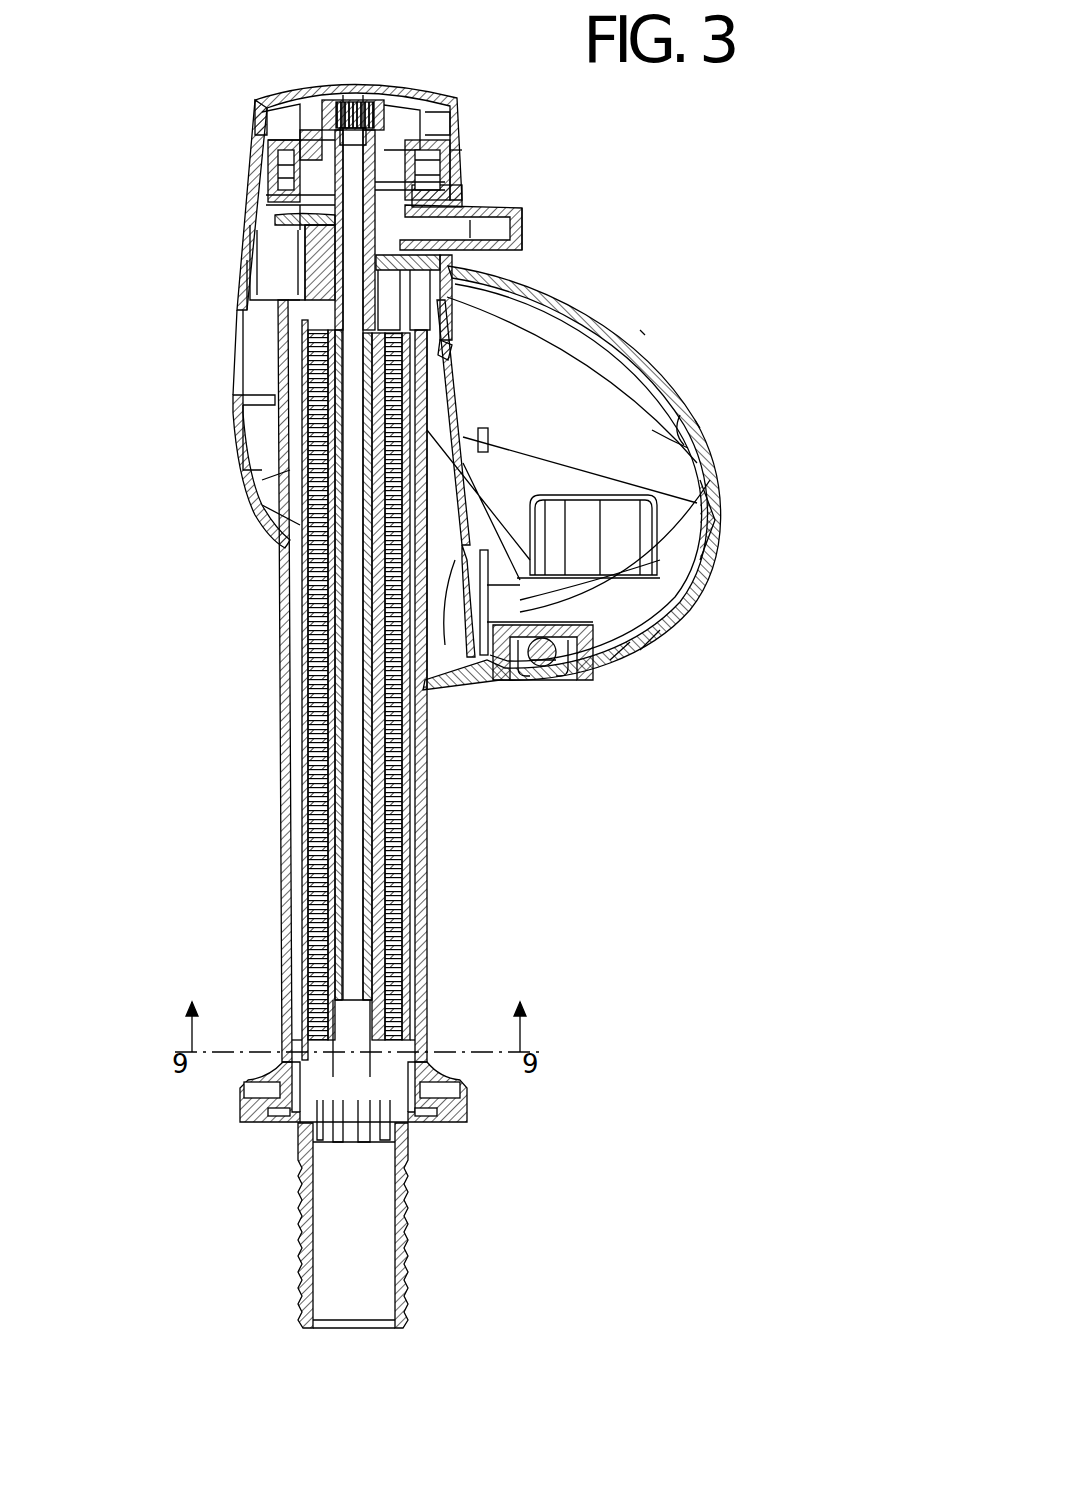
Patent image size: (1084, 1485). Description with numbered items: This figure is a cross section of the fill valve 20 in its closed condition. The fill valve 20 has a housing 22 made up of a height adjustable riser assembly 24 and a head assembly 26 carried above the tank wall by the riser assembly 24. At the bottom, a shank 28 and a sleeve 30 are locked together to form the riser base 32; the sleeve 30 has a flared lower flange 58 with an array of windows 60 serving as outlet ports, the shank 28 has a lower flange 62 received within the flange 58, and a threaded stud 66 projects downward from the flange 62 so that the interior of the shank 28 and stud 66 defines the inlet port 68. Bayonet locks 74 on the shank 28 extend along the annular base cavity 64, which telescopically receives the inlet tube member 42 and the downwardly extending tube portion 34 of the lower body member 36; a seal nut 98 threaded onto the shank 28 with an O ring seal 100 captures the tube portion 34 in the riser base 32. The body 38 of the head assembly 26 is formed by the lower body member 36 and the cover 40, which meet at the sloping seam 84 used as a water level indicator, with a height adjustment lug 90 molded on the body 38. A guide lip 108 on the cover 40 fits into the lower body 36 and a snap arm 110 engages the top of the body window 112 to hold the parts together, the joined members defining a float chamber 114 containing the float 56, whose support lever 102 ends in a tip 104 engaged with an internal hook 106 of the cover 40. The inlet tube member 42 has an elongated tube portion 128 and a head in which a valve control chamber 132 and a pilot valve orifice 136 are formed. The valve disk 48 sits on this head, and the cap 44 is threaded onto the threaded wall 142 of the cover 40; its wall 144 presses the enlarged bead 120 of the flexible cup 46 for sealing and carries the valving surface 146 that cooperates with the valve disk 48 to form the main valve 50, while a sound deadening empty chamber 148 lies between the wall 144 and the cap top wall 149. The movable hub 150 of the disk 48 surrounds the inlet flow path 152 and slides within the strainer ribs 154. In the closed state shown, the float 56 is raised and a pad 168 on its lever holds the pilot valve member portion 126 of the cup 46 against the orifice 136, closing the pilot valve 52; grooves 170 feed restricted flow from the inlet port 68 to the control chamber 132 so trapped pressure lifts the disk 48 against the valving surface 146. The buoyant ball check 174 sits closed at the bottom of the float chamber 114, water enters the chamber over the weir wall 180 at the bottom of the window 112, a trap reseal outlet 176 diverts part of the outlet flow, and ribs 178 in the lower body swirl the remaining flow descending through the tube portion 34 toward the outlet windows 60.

The fill valve 20 is at (722, 226).
The housing 22 is at (280, 752).
The riser assembly 24 is at (505, 885).
The head assembly 26 is at (727, 318).
The shank 28 is at (396, 832).
The sleeve 30 is at (282, 940).
The riser base 32 is at (420, 976).
The tube portion 34 is at (282, 600).
The lower body member 36 is at (662, 640).
The body 38 is at (235, 296).
The upper body member or cover 40 is at (662, 398).
The inlet tube member 42 is at (312, 648).
The cap 44 is at (258, 120).
The flexible cup 46 is at (268, 195).
The valve disk 48 is at (455, 135).
The main valve 50 is at (532, 136).
The pilot valve 52 is at (178, 226).
The float 56 is at (668, 550).
The flared lower flange 58 is at (258, 1070).
The windows 60 is at (252, 1087).
The lower flange 62 is at (275, 1120).
The base cavity 64 is at (412, 760).
The threaded stud 66 is at (406, 1236).
The inlet port 68 is at (370, 1211).
The bayonet locks 74 is at (320, 572).
The seam 84 is at (732, 500).
The height adjustment lug 90 is at (703, 600).
The seal nut 98 is at (295, 320).
The O ring seal 100 is at (290, 300).
The support lever 102 is at (497, 522).
The tip 104 is at (275, 202).
The hook 106 is at (272, 212).
The guide lip 108 is at (735, 512).
The snap arm 110 is at (450, 348).
The body window 112 is at (470, 402).
The float chamber 114 is at (690, 437).
The bead 120 is at (268, 160).
The pilot valve member portion 126 is at (288, 232).
The tube portion 128 is at (355, 805).
The valve control chamber 132 is at (447, 186).
The pilot valve orifice 136 is at (278, 175).
The threaded wall 142 is at (442, 175).
The wall 144 is at (296, 90).
The valving surface 146 is at (416, 118).
The sound deadening empty chamber 148 is at (296, 135).
The cap top wall 149 is at (445, 110).
The hub 150 is at (465, 212).
The inlet flow path 152 is at (352, 158).
The strainer ribs 154 is at (360, 92).
The pad 168 is at (318, 140).
The grooves 170 is at (425, 118).
The ball check 174 is at (556, 680).
The trap reseal outlet 176 is at (520, 238).
The ribs 178 is at (482, 318).
The weir wall 180 is at (455, 590).